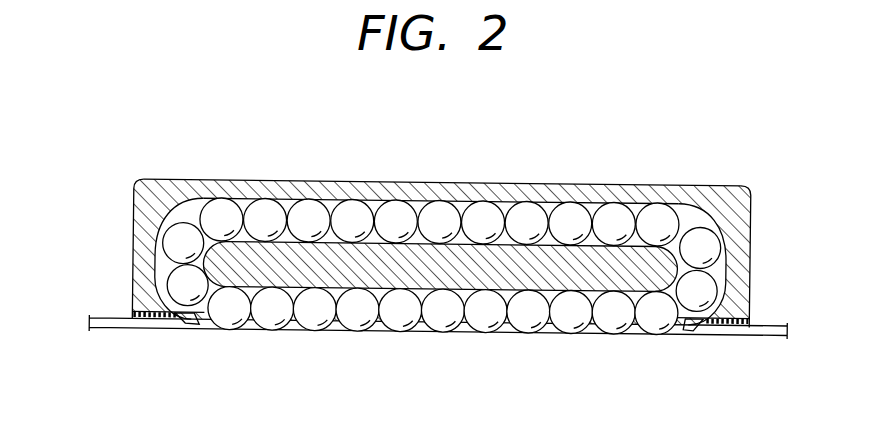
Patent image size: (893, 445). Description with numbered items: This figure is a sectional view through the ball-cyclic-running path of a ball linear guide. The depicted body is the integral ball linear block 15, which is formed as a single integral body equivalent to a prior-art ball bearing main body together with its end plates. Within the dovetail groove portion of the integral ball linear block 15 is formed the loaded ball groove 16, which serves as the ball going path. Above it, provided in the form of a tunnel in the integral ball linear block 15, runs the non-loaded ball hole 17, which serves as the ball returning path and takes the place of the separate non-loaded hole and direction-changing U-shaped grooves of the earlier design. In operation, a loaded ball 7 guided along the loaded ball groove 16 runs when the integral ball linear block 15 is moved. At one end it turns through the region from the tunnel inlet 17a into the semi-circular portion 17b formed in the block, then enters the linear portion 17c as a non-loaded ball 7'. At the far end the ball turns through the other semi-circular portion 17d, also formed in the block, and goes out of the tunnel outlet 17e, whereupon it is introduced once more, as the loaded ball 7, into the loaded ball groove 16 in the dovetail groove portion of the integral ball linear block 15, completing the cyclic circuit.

The integral ball linear block 15 is at (241, 180).
The non-loaded ball hole 17 is at (445, 258).
The tunnel inlet 17a is at (694, 319).
The semi-circular portion 17b is at (724, 238).
The linear portion 17c is at (466, 195).
The semi-circular portion 17d is at (150, 218).
The tunnel outlet 17e is at (194, 323).
The loaded ball 7 is at (442, 340).
The non-loaded ball 7' is at (442, 219).
The loaded ball groove 16 is at (508, 331).